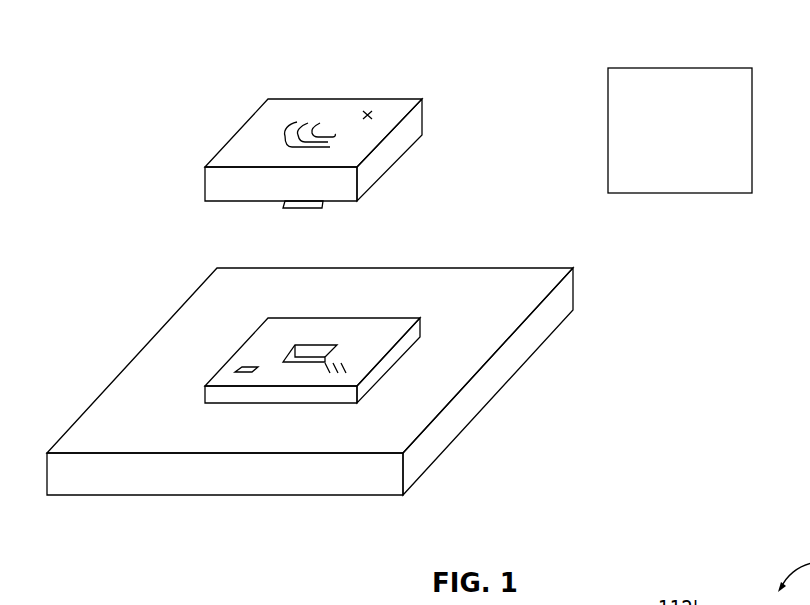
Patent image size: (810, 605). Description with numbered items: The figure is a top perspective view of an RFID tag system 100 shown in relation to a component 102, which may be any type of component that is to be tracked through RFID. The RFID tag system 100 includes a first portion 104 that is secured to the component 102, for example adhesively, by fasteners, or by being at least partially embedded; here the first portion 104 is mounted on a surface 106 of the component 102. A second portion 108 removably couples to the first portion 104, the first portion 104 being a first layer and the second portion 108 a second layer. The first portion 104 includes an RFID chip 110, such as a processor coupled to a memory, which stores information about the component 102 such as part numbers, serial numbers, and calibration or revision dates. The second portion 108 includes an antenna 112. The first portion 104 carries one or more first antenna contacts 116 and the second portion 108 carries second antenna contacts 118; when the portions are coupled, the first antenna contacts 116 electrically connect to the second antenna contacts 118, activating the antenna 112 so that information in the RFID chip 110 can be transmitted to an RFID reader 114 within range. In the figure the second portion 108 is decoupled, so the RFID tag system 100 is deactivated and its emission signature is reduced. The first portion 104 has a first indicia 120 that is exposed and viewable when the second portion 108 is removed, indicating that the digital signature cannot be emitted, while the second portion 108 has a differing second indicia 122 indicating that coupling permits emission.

The RFID tag system 100 is at (490, 55).
The component 102 is at (537, 282).
The first portion 104 is at (398, 327).
The surface 106 is at (462, 375).
The second portion 108 is at (333, 110).
The RFID chip 110 is at (247, 365).
The antenna 112 is at (286, 136).
The RFID reader 114 is at (678, 68).
The first antenna contacts 116 is at (317, 343).
The second antenna contacts 118 is at (302, 210).
The first indicia 120 is at (345, 363).
The second indicia 122 is at (378, 114).